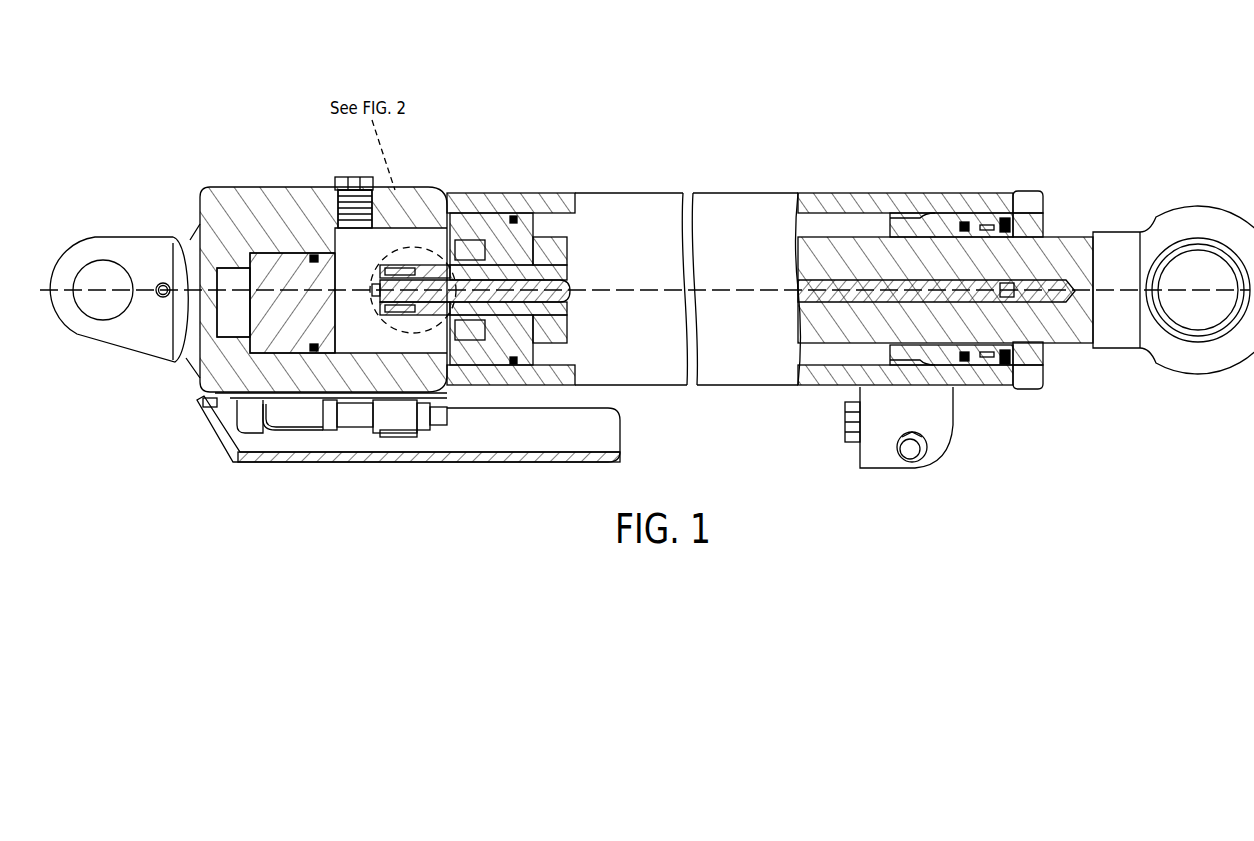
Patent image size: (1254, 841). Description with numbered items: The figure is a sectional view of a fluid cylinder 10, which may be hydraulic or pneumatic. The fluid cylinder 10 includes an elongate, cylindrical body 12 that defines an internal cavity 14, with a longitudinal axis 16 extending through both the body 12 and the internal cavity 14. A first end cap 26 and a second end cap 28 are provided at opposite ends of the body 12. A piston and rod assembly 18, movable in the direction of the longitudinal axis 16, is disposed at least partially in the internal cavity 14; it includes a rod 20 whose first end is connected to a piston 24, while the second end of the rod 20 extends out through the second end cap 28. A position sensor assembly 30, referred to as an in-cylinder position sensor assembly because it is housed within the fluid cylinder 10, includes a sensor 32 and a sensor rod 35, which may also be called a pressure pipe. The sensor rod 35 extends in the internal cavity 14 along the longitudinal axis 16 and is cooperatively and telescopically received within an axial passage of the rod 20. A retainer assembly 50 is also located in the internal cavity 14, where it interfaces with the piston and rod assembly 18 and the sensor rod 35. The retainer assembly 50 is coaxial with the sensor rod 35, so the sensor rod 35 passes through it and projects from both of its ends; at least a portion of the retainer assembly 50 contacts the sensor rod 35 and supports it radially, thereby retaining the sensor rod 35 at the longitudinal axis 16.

The fluid cylinder 10 is at (218, 90).
The body 12 is at (856, 192).
The internal cavity 14 is at (378, 342).
The longitudinal axis 16 is at (1107, 288).
The piston and rod assembly 18 is at (524, 248).
The rod 20 is at (560, 323).
The piston 24 is at (500, 343).
The first end cap 26 is at (190, 188).
The second end cap 28 is at (1016, 190).
The position sensor assembly 30 is at (334, 321).
The sensor 32 is at (197, 370).
The sensor rod 35 is at (560, 280).
The retainer assembly 50 is at (428, 246).